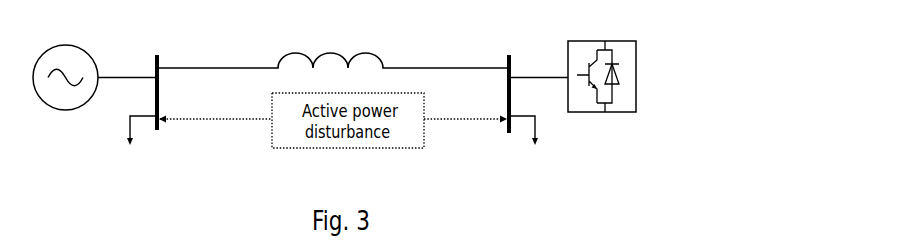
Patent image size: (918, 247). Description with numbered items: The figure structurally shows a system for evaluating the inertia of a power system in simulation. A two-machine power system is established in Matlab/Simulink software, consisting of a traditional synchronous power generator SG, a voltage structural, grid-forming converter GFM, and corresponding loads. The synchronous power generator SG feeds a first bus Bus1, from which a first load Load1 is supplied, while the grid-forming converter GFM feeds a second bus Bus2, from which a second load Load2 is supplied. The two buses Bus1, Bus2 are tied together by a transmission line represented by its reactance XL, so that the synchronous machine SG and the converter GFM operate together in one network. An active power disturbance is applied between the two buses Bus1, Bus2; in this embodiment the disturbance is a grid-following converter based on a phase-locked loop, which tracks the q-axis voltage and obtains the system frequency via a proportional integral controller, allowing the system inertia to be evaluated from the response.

The synchronous power generator SG is at (95, 93).
The bus 1 Bus1 is at (155, 78).
The bus 2 Bus2 is at (513, 80).
The line reactance / transmission line inductor XL is at (333, 49).
The load Load1 is at (133, 142).
The load Load2 is at (533, 142).
The voltage structural converter GFM is at (611, 98).